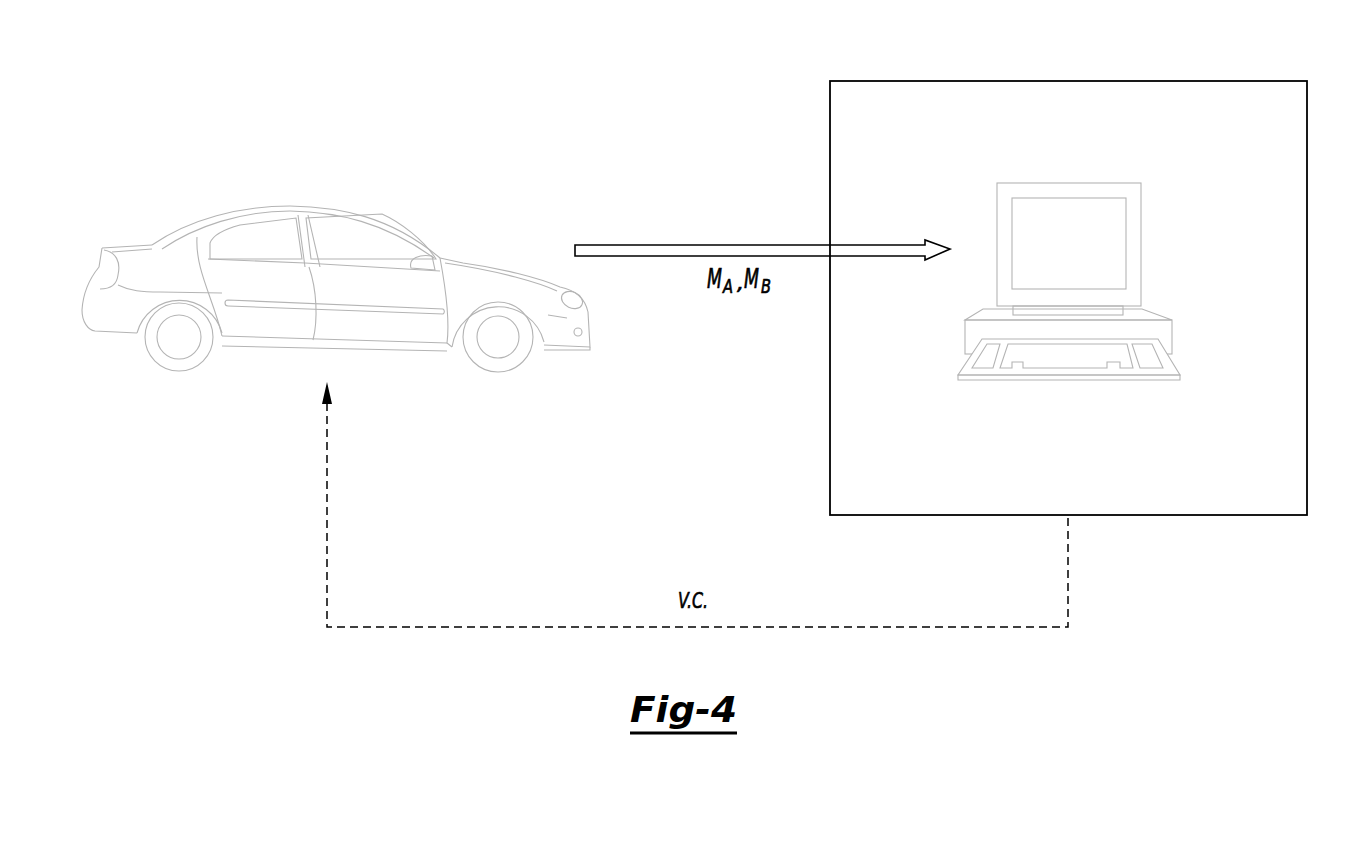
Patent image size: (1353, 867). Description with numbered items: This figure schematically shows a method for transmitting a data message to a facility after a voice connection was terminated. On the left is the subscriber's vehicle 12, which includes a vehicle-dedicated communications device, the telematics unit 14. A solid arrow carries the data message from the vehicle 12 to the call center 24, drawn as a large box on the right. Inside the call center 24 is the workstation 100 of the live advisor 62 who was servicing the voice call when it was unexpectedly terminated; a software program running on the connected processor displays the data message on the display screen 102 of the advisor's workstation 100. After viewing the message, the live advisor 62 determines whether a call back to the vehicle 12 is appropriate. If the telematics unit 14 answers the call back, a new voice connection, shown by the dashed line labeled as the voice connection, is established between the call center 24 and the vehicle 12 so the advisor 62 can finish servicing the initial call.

The vehicle 12 is at (336, 314).
The telematics unit 14 is at (110, 318).
The call center 24 is at (1068, 341).
The live advisor 62 is at (1069, 405).
The advisor workstation 100 is at (1070, 378).
The display screen 102 is at (1109, 245).